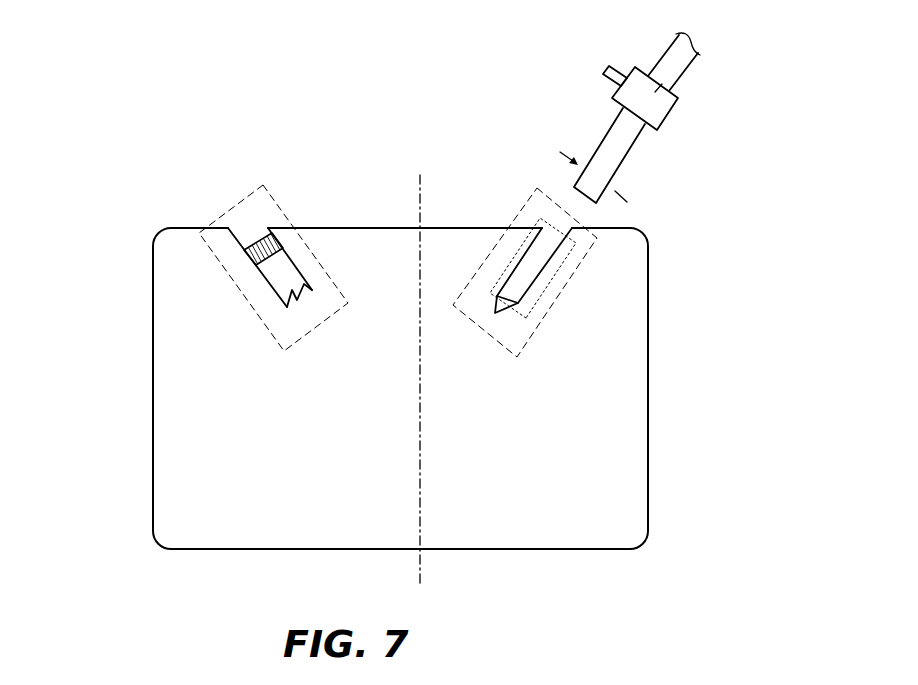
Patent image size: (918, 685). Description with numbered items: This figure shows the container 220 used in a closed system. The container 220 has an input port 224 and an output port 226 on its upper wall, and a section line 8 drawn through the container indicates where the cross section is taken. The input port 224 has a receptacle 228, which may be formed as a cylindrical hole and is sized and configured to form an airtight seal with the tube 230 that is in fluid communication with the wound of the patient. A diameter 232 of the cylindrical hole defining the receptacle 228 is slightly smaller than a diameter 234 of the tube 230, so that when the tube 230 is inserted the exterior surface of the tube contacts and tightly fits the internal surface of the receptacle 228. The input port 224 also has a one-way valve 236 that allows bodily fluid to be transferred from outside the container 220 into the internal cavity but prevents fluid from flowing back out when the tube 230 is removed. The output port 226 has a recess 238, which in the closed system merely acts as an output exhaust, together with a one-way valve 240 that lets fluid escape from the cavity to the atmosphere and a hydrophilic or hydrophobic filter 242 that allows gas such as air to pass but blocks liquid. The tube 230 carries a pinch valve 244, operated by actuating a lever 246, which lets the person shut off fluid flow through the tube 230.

The container 220 is at (118, 418).
The output port 226 is at (232, 195).
The recess 238 is at (250, 248).
The filter 242 is at (262, 284).
The one-way valve 240 is at (268, 300).
The diameter 232 is at (497, 272).
The one-way valve 236 is at (528, 312).
The receptacle 228 is at (542, 268).
The input port 224 is at (539, 302).
The tube 230 is at (613, 143).
The pinch valve 244 is at (678, 82).
The lever 246 is at (617, 63).
The diameter 234 is at (622, 192).
The section line 8- 8 is at (390, 585).